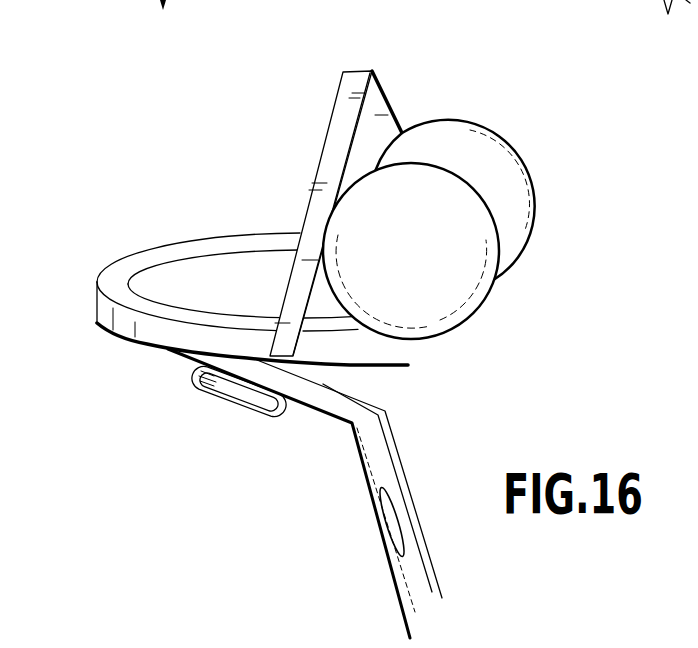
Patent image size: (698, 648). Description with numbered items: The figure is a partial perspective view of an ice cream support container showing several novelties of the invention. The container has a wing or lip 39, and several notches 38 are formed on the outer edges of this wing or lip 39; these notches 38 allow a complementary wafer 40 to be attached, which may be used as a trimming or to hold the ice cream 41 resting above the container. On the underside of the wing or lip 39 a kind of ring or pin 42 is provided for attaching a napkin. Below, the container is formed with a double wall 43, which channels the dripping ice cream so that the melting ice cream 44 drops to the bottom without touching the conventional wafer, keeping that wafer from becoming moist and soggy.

The notches 38 is at (282, 201).
The wing or lip 39 is at (130, 318).
The complementary wafer 40 is at (385, 92).
The ice cream 41 is at (447, 230).
The ring or pin 42 is at (230, 405).
The double wall 43 is at (398, 473).
The melting ice cream 44 is at (383, 515).